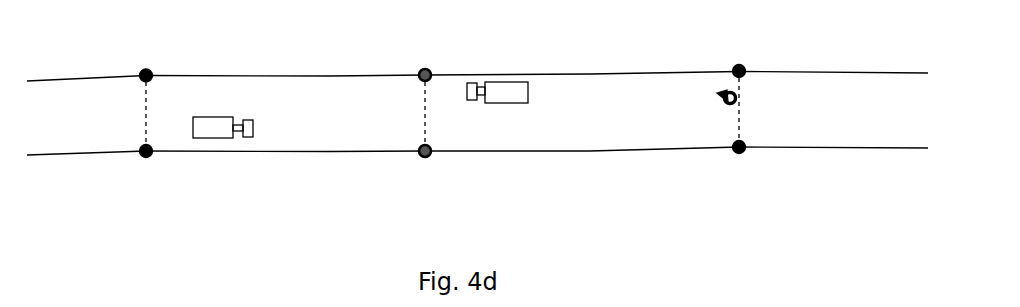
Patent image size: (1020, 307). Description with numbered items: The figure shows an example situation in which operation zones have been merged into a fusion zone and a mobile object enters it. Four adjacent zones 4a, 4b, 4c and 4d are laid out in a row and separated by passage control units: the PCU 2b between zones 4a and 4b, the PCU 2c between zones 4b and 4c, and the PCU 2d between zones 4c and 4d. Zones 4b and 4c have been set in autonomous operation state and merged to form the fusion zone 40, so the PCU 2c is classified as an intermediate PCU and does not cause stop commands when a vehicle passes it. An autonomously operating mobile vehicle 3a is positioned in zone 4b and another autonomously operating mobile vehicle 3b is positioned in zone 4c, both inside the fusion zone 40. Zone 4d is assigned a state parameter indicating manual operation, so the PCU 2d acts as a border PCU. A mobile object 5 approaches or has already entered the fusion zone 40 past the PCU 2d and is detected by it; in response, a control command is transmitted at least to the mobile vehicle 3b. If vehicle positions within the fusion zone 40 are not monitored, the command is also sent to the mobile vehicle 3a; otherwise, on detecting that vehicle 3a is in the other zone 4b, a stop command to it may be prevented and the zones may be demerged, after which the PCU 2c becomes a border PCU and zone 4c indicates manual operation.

The PCU 2b is at (147, 110).
The PCU 2c is at (424, 117).
The PCU 2d is at (741, 105).
The autonomously operating mobile vehicle 3a is at (220, 130).
The autonomously operating mobile vehicle 3b is at (493, 88).
The zone 4a is at (70, 110).
The zone 4b is at (380, 112).
The zone 4c is at (670, 114).
The zone 4d is at (905, 100).
The mobile object 5 is at (723, 88).
The fusion zone 40 is at (428, 184).